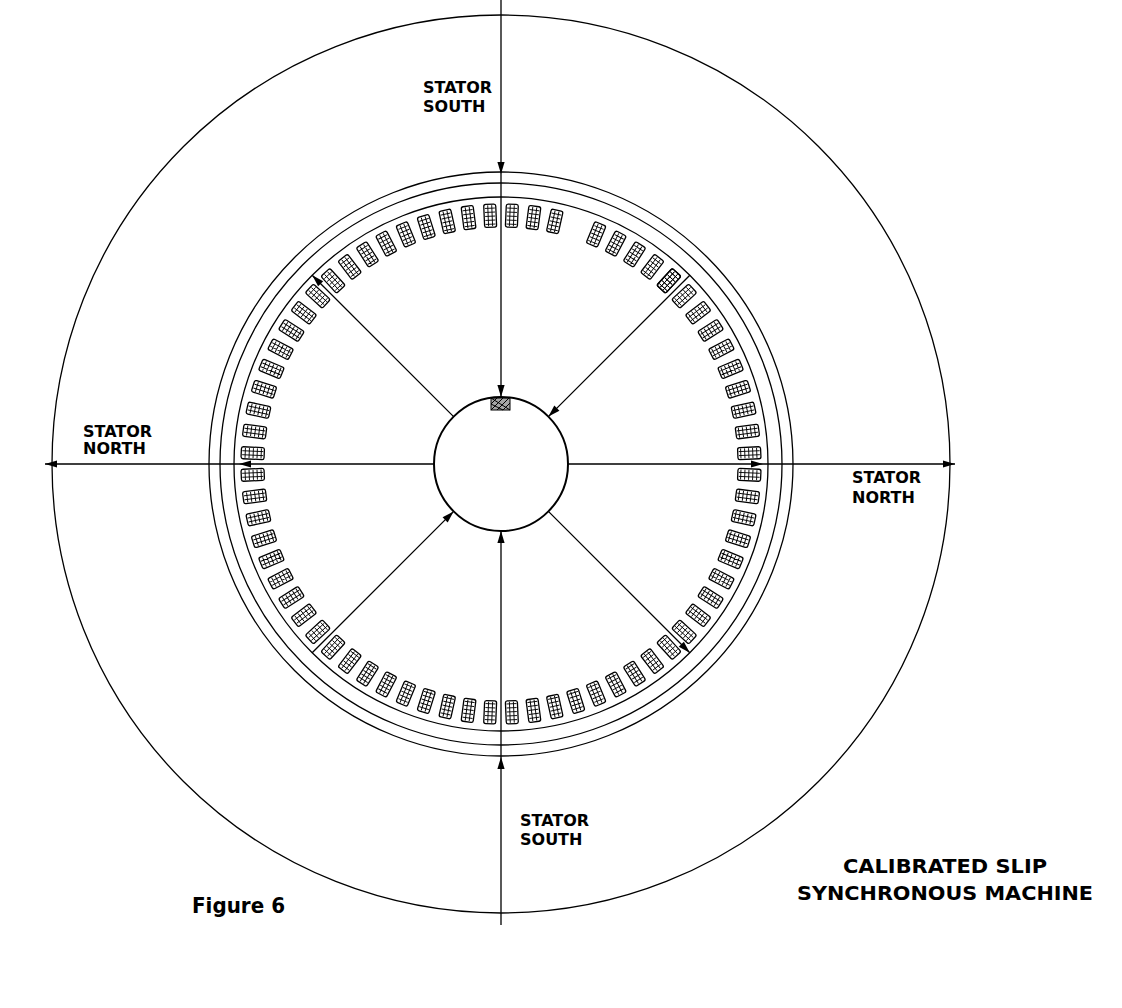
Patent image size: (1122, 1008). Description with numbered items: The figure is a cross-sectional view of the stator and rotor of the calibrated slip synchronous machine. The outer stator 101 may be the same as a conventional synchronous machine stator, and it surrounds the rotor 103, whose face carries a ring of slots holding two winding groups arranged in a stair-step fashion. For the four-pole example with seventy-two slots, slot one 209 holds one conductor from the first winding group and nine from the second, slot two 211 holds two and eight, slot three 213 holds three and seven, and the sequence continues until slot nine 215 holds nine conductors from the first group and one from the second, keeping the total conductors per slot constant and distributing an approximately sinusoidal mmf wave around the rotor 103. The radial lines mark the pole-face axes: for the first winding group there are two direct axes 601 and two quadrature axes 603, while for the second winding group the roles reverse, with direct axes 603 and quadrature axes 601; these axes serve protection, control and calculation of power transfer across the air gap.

The stator 101 is at (849, 182).
The rotor 103 is at (600, 224).
The slot one 209 is at (512, 204).
The slot two 211 is at (535, 206).
The slot three 213 is at (557, 210).
The slot nine 215 is at (677, 272).
The direct axis 601 is at (501, 287).
The quadrature axis 603 is at (383, 347).